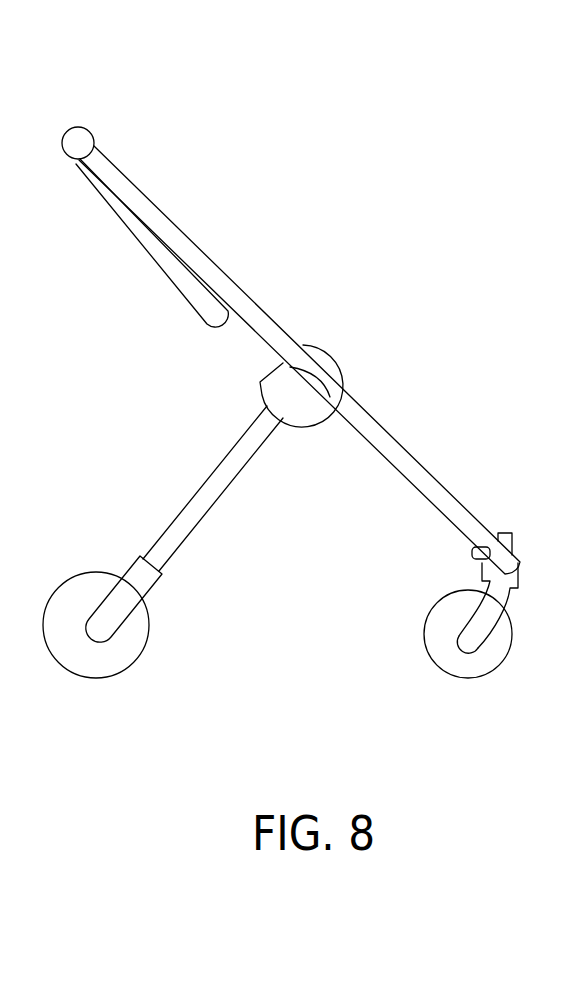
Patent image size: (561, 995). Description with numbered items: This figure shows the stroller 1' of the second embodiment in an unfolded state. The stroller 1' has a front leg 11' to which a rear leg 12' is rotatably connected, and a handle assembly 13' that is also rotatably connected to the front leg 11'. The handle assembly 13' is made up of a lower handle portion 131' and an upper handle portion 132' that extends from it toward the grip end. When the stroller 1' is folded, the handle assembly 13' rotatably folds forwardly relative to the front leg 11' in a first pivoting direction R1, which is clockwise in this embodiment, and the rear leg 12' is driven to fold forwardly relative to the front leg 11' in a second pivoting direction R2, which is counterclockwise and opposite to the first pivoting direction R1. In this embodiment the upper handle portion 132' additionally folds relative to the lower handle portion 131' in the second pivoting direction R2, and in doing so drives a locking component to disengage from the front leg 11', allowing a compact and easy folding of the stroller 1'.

The stroller 1' is at (281, 365).
The front leg 11' is at (291, 390).
The rear leg 12' is at (184, 524).
The handle assembly 13' is at (209, 240).
The lower handle portion 131' is at (300, 266).
The upper handle portion 132' is at (167, 216).
The first pivoting direction R1 is at (303, 318).
The second pivoting direction R2 is at (98, 107).